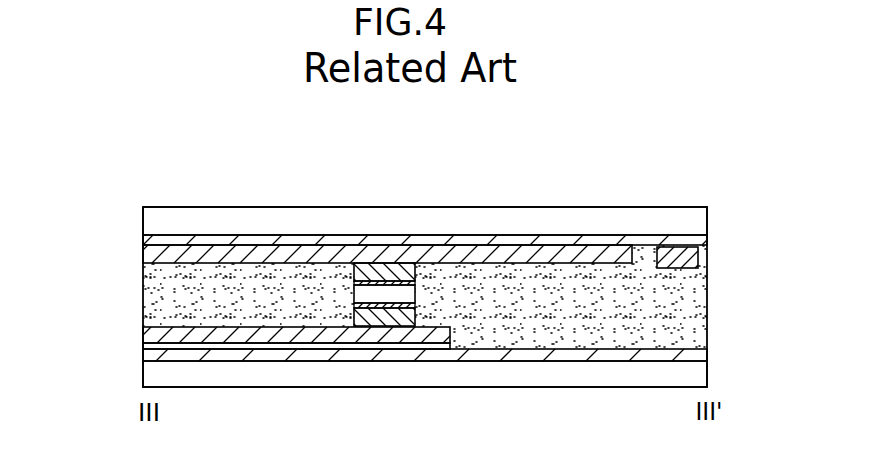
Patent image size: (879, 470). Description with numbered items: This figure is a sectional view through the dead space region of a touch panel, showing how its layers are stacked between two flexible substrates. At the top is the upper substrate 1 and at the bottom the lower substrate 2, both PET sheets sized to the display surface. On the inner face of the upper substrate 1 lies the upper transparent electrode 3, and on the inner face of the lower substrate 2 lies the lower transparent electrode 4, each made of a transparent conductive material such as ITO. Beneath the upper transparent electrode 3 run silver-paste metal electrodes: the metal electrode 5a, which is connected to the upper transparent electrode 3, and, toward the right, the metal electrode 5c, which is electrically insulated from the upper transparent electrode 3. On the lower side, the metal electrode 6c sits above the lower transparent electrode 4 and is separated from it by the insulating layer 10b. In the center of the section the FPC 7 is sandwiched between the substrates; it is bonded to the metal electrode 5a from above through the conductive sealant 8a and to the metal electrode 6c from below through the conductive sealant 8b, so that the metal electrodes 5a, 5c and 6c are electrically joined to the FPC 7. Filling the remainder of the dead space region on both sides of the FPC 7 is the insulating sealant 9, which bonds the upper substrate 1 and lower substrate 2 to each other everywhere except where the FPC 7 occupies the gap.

The upper substrate 1 is at (698, 226).
The lower substrate 2 is at (700, 372).
The upper transparent electrode 3 is at (700, 241).
The lower transparent electrode 4 is at (700, 355).
The metal electrode 5a is at (152, 257).
The metal electrode 5c is at (697, 258).
The metal electrode 6c is at (152, 336).
The FPC 7 is at (352, 295).
The conductive sealant 8a is at (404, 268).
The conductive sealant 8b is at (400, 318).
The insulating sealant 9 is at (700, 303).
The insulating layer 10b is at (148, 347).